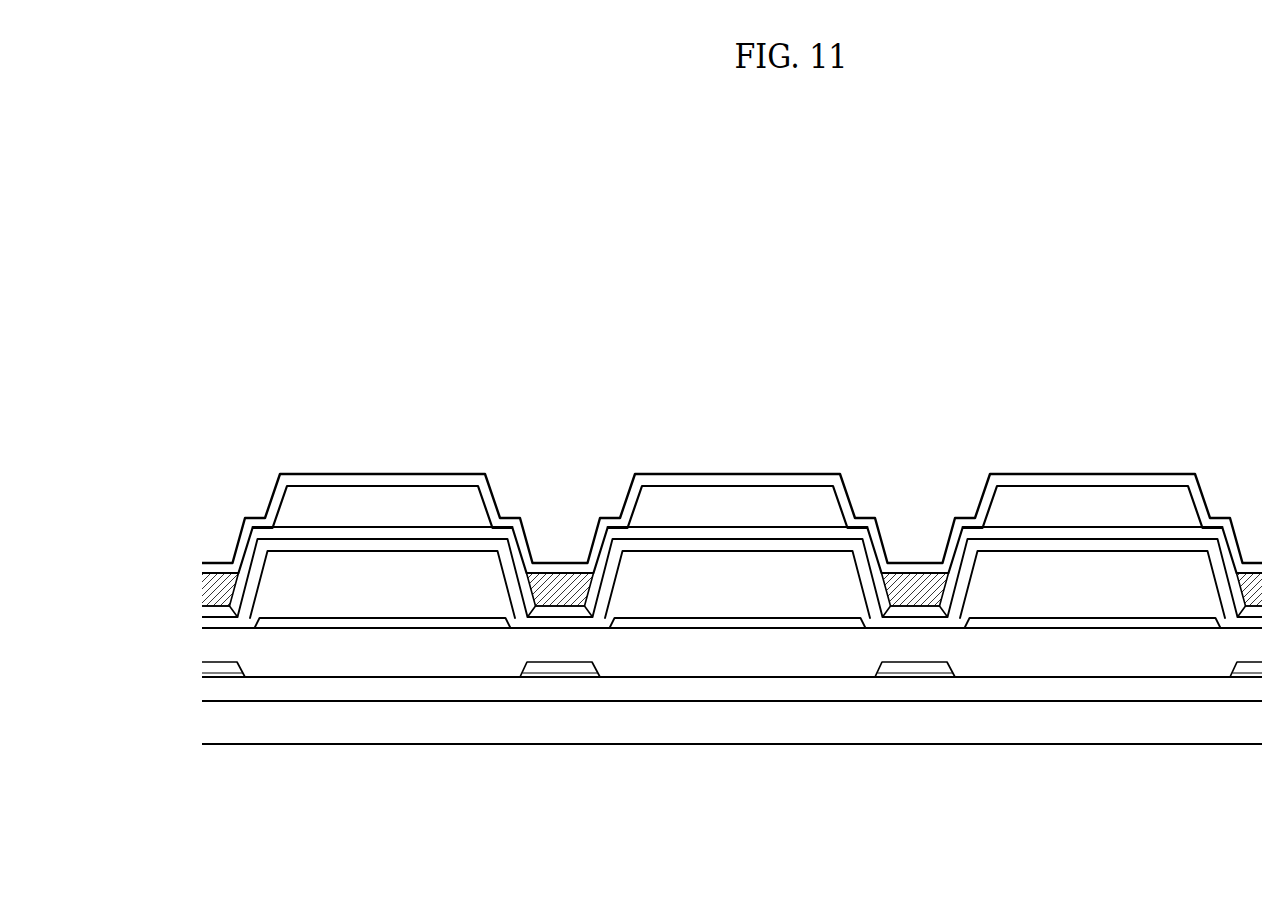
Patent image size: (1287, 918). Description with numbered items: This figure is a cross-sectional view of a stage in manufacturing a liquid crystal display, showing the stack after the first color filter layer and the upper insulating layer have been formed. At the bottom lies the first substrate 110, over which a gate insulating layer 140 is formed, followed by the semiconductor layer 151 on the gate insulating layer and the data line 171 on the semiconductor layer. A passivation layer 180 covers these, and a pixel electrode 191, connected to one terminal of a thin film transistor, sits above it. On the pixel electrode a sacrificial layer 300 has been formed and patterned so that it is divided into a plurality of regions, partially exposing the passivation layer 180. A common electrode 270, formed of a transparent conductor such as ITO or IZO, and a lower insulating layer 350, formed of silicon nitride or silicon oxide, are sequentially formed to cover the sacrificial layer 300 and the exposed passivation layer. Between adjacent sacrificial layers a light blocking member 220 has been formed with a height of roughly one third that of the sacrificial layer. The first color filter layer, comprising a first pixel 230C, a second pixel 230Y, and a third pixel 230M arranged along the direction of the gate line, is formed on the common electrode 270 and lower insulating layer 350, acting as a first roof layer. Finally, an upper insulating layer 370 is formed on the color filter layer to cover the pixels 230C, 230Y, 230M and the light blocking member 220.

The first substrate 110 is at (1058, 722).
The gate insulating layer 140 is at (1158, 660).
The semiconductor layer 151 is at (535, 675).
The data line 171 is at (587, 667).
The passivation layer 180 is at (650, 657).
The pixel electrode 191 is at (700, 622).
The light blocking member 220 is at (930, 598).
The first pixel 230C is at (383, 511).
The second pixel 230Y is at (738, 511).
The third pixel 230M is at (1093, 511).
The common electrode 270 is at (768, 545).
The sacrificial layer 300 is at (400, 592).
The lower insulating layer 350 is at (905, 615).
The upper insulating layer 370 is at (1127, 480).